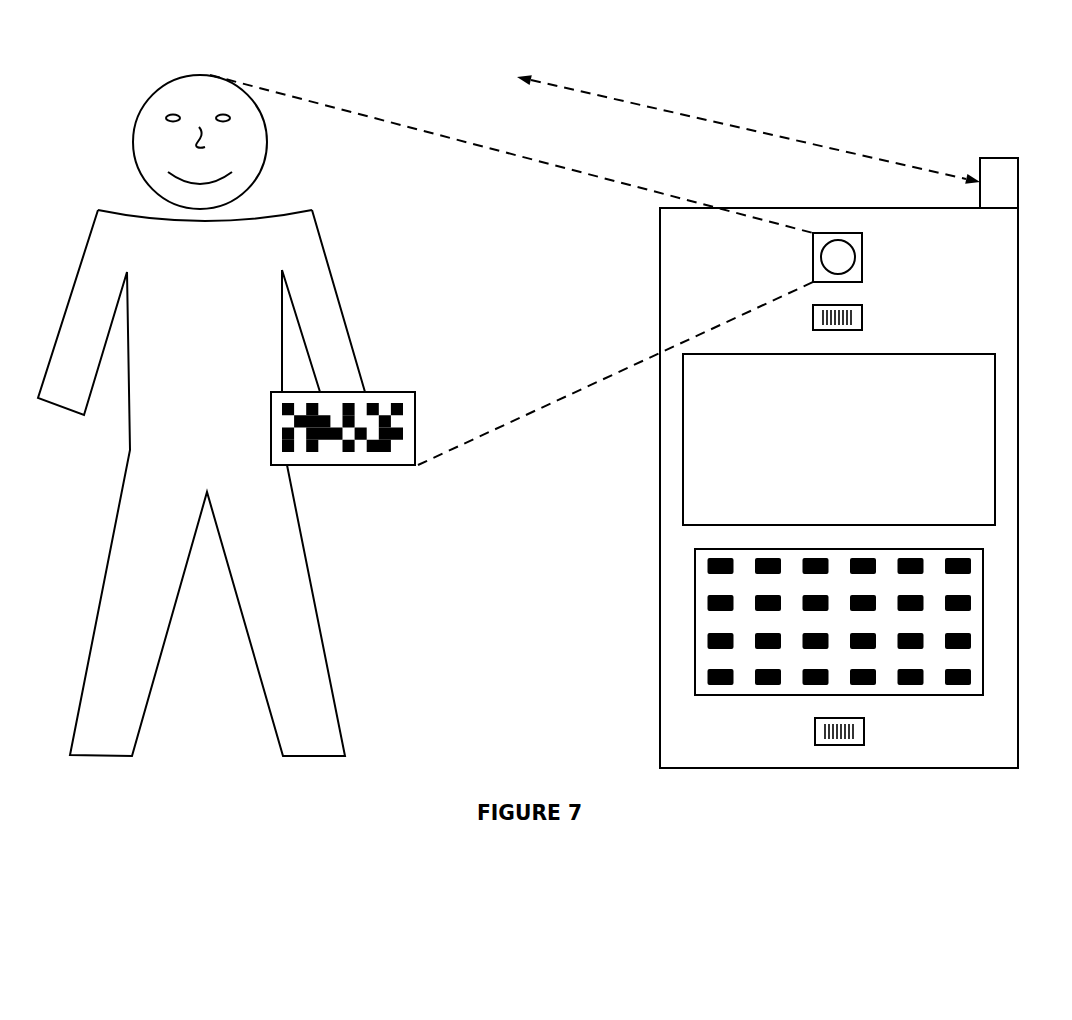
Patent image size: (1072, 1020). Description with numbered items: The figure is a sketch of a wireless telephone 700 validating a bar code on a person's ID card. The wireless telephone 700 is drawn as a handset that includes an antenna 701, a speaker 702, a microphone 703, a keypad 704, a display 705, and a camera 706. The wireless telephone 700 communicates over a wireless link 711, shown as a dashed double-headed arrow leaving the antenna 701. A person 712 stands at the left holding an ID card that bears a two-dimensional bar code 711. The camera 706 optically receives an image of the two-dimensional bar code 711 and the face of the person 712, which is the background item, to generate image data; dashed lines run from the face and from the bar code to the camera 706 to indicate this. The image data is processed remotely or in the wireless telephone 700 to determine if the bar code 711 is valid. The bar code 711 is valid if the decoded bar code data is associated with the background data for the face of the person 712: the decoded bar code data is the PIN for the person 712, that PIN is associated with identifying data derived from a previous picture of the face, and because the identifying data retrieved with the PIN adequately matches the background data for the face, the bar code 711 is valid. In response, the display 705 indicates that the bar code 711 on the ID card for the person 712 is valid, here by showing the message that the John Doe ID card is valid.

The wireless telephone 700 is at (1005, 92).
The antenna 701 is at (1013, 158).
The speaker 702 is at (862, 318).
The microphone 703 is at (864, 731).
The keypad 704 is at (755, 696).
The display 705 is at (975, 354).
The camera 706 is at (862, 250).
The two-dimensional bar code 711 is at (385, 465).
The person 712 is at (307, 210).